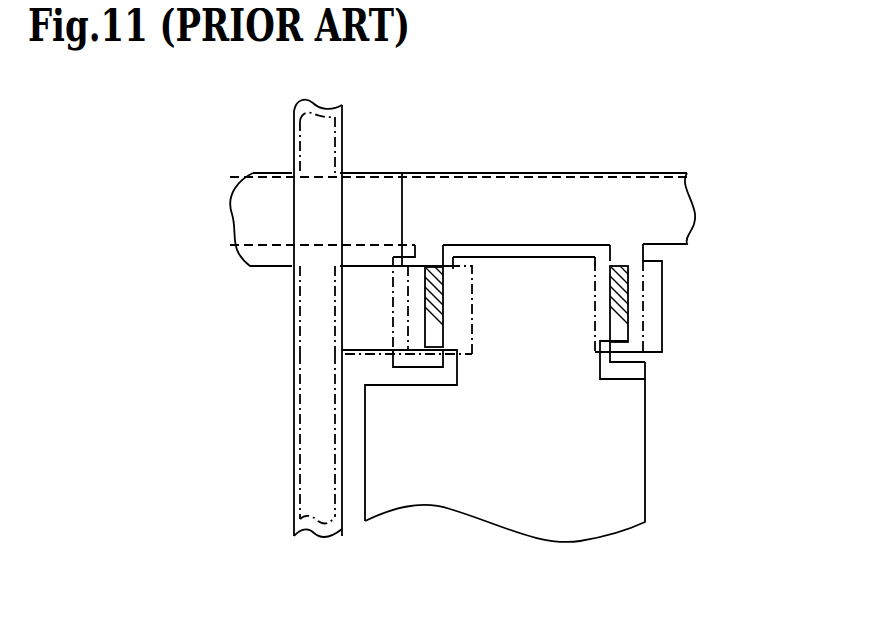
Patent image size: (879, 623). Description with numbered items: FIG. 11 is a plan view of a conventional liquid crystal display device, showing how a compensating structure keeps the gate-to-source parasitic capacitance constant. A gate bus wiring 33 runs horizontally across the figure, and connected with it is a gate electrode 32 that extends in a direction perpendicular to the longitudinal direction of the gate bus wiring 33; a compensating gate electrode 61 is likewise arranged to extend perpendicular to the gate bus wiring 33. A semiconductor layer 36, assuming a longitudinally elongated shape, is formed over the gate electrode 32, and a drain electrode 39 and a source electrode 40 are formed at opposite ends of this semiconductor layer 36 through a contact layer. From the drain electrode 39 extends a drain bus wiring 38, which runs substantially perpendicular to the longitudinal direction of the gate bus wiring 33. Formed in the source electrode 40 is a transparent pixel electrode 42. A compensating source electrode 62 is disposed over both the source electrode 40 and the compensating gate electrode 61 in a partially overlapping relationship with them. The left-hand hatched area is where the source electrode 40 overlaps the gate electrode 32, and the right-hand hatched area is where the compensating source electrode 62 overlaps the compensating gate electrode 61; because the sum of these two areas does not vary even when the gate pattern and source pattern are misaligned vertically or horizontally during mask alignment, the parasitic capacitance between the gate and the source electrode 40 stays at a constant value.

The gate bus wiring 33 is at (608, 205).
The drain electrode 39 is at (370, 310).
The drain bus wiring 38 is at (323, 480).
The transparent pixel electrode 42 is at (645, 492).
The gate electrode 32 is at (428, 362).
The compensating gate electrode 61 is at (643, 372).
The source electrode 40 is at (443, 290).
The compensating source electrode 62 is at (608, 312).
The semiconductor layer 36 is at (473, 331).